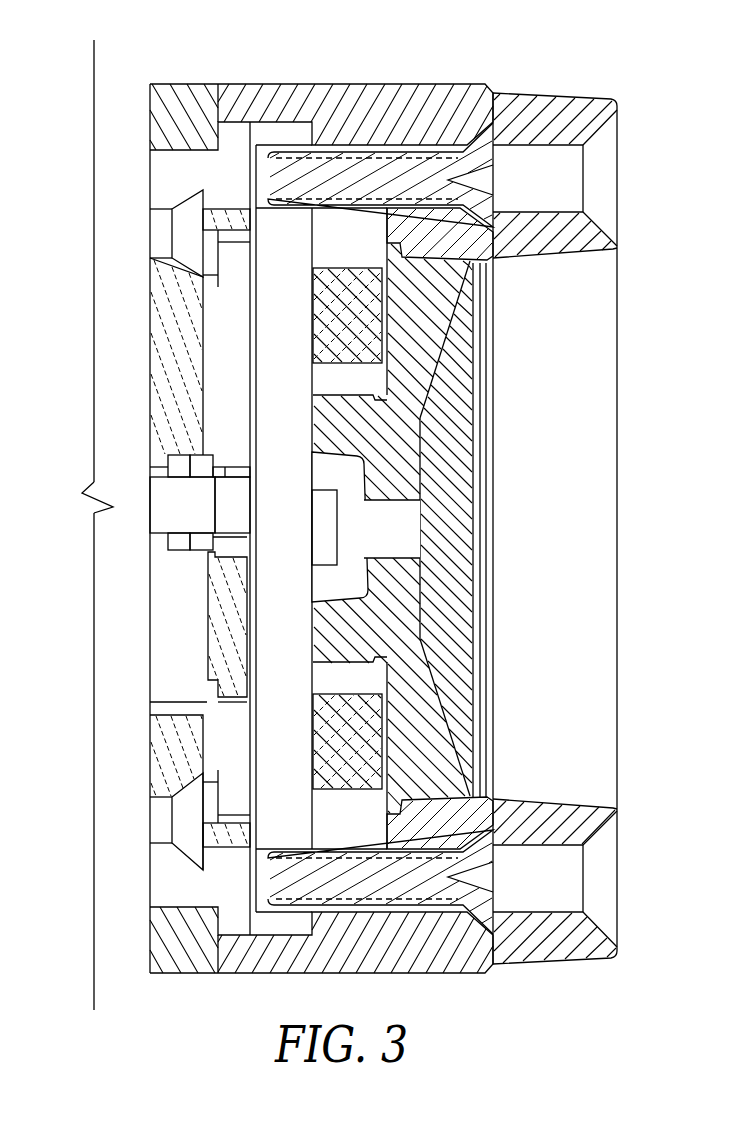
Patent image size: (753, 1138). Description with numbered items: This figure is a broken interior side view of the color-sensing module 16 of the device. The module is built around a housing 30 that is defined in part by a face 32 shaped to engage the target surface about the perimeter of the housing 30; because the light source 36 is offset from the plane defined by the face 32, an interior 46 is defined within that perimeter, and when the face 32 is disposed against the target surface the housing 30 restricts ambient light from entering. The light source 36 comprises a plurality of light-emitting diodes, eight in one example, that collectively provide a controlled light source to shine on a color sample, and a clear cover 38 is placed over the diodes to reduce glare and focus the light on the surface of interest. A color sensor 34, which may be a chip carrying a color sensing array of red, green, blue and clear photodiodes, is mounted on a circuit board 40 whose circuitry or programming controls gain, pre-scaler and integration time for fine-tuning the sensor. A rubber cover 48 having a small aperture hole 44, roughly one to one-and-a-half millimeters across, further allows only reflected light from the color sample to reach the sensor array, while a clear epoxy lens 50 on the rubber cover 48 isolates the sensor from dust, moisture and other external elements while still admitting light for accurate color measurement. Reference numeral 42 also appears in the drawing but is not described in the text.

The color-sensing module 16 is at (197, 33).
The housing 30 is at (583, 97).
The face 32 is at (597, 168).
The color sensor 34 is at (323, 508).
The light source 36 is at (328, 328).
The clear cover 38 is at (402, 320).
The circuit board 40 is at (275, 627).
The nut body 42 is at (524, 100).
The aperture hole 44 is at (407, 518).
The interior 46 is at (577, 633).
The rubber cover 48 is at (405, 445).
The clear epoxy lens 50 is at (453, 577).